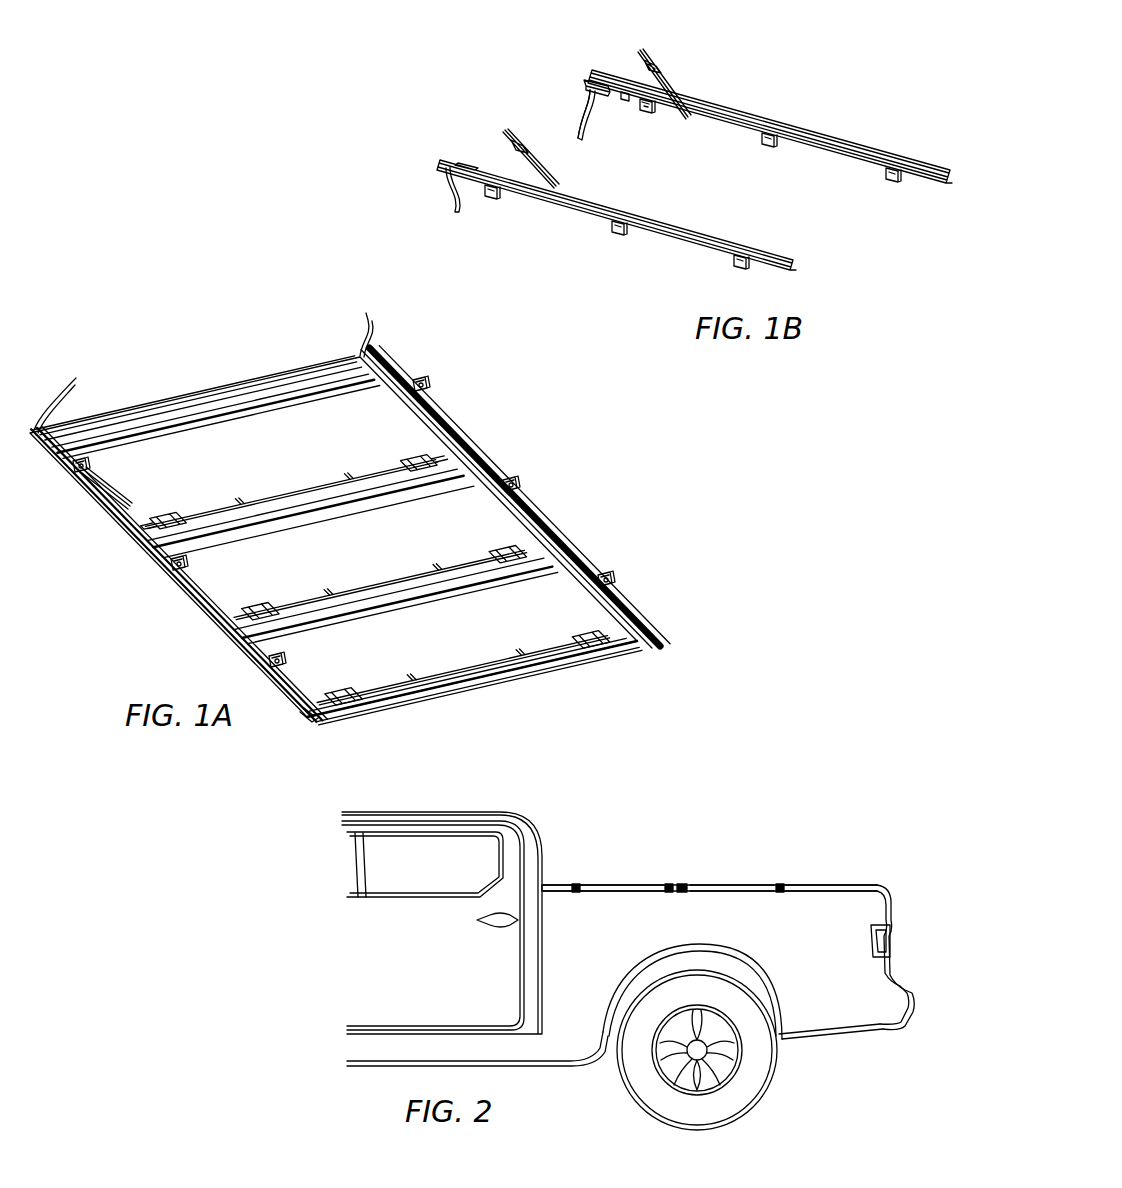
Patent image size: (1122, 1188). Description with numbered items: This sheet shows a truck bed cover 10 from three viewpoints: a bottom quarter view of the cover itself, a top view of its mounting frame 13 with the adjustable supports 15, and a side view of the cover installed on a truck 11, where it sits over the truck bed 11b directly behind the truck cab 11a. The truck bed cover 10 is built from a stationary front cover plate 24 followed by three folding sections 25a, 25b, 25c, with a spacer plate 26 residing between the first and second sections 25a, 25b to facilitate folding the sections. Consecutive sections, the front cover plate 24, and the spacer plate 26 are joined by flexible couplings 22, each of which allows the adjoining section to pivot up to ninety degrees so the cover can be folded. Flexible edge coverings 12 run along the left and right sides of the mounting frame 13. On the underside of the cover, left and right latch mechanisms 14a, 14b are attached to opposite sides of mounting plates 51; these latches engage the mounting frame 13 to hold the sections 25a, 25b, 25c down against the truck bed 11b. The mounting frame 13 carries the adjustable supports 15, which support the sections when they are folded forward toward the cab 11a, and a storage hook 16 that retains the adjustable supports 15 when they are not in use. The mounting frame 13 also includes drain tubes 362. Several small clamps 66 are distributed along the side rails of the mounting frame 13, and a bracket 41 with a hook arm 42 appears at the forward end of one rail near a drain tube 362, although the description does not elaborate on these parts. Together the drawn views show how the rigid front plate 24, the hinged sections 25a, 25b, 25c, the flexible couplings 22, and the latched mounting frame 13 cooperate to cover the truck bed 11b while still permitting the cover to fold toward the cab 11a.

In FIG. 1A, the truck bed cover 10 is at (218, 324).
In FIG. 2, the truck 11 is at (725, 720).
In FIG. 2, the truck cab 11a is at (465, 797).
In FIG. 2, the truck bed 11b is at (812, 797).
In FIG. 1A, the flexible edge covering 12 is at (305, 720).
In FIG. 1A, the mounting frame 13 is at (477, 458).
In FIG. 1B, the mounting frame 13 is at (760, 118).
In FIG. 1A, the left latch mechanism 14a is at (172, 508).
In FIG. 1A, the right latch mechanism 14b is at (413, 454).
In FIG. 1A, the adjustable support 15 is at (126, 493).
In FIG. 1B, the adjustable support 15 is at (660, 80).
In FIG. 1B, the storage hook 16 is at (636, 108).
In FIG. 2, the flexible coupling 22 is at (577, 884).
In FIG. 1A, the stationary front cover plate 24 is at (130, 425).
In FIG. 2, the stationary front cover plate 24 is at (562, 884).
In FIG. 1A, the first folding section 25a is at (256, 458).
In FIG. 2, the first folding section 25a is at (615, 884).
In FIG. 1A, the second folding section 25b is at (349, 552).
In FIG. 2, the second folding section 25b is at (735, 884).
In FIG. 1A, the third folding section 25c is at (431, 638).
In FIG. 2, the third folding section 25c is at (832, 884).
In FIG. 1A, the spacer plate 26 is at (380, 492).
In FIG. 2, the spacer plate 26 is at (681, 884).
In FIG. 1B, the bracket 41 is at (596, 78).
In FIG. 1B, the hook arm 42 is at (602, 98).
In FIG. 1A, the mounting plate 51 is at (223, 517).
In FIG. 1A, the rail clamp 66 is at (66, 474).
In FIG. 1A, the drain tube 362 is at (203, 373).
In FIG. 1B, the drain tube 362 is at (588, 96).